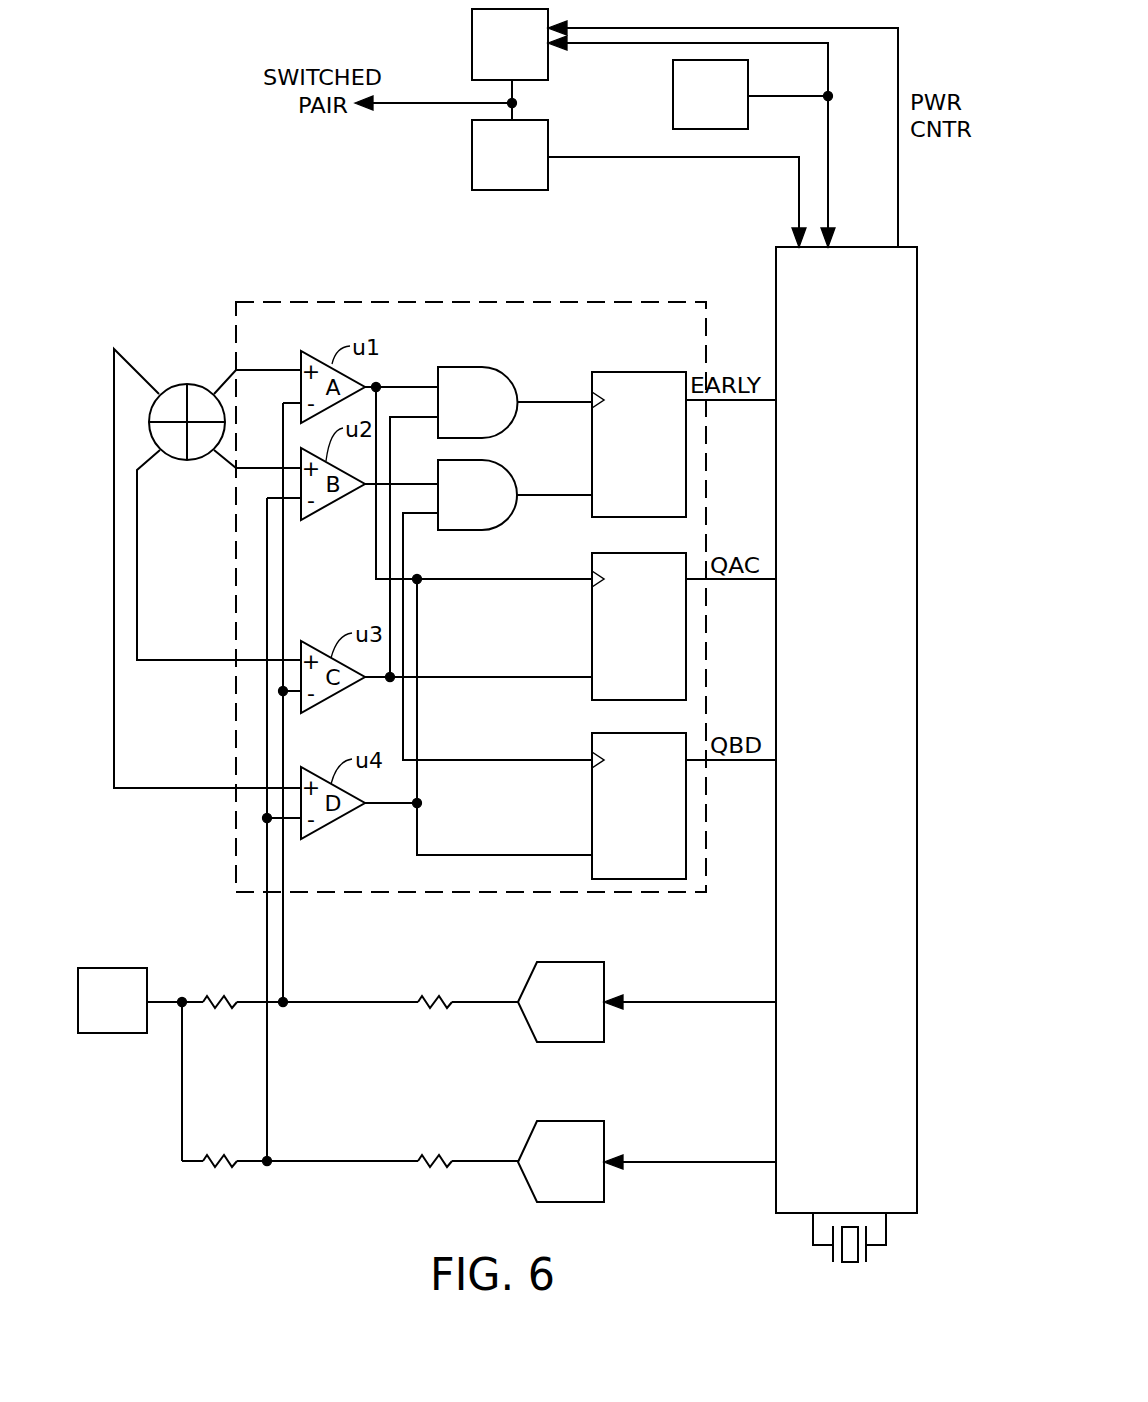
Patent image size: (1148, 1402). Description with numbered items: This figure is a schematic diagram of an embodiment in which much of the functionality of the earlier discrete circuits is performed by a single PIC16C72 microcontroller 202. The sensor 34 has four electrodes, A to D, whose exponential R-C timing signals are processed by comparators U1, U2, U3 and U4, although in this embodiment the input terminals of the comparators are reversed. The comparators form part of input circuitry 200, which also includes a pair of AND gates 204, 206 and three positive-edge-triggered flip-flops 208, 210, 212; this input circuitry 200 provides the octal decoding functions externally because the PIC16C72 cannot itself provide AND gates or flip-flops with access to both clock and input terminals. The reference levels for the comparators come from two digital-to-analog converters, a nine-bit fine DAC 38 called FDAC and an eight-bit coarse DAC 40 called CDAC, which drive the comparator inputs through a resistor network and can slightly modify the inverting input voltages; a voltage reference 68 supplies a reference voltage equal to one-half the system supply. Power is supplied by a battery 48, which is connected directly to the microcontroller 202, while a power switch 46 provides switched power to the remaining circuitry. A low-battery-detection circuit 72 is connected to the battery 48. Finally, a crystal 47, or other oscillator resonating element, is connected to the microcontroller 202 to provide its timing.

The sensor 34 is at (187, 385).
The FDAC (fine DAC) 38 is at (567, 962).
The CDAC (coarse DAC) 40 is at (568, 1121).
The power switch 46 is at (472, 60).
The crystal 47 is at (850, 1262).
The battery 48 is at (673, 110).
The voltage reference 68 is at (92, 968).
The low-battery-detection circuit 72 is at (472, 170).
The input circuitry 200 is at (432, 300).
The microcontroller 202 is at (846, 730).
The AND gate 204 is at (515, 402).
The AND gate 206 is at (515, 495).
The positive-edge-triggered flip-flop 208 is at (639, 444).
The positive-edge-triggered flip-flop 210 is at (639, 626).
The positive-edge-triggered flip-flop 212 is at (639, 806).